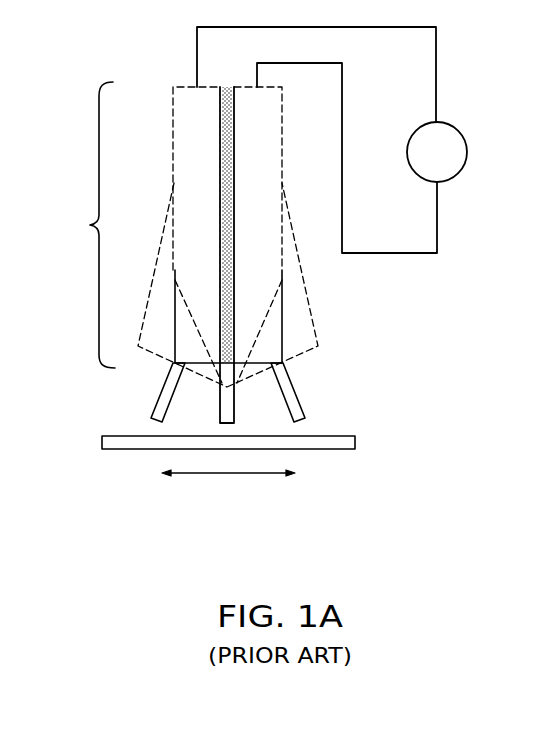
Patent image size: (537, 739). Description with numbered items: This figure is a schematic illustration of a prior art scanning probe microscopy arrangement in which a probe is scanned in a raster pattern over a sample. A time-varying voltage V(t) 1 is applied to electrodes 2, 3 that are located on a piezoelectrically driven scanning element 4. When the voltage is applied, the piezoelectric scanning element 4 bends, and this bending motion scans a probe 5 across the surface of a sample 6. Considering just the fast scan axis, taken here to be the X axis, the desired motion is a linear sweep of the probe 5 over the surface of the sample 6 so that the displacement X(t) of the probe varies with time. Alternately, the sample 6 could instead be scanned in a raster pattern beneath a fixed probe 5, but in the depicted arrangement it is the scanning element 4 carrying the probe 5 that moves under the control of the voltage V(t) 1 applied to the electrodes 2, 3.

The time-varying voltage V(t) 1 is at (467, 156).
The electrode 2 is at (204, 203).
The electrode 3 is at (265, 203).
The piezoelectrically driven scanning element 4 is at (90, 225).
The probe 5 is at (302, 401).
The sample 6 is at (345, 449).